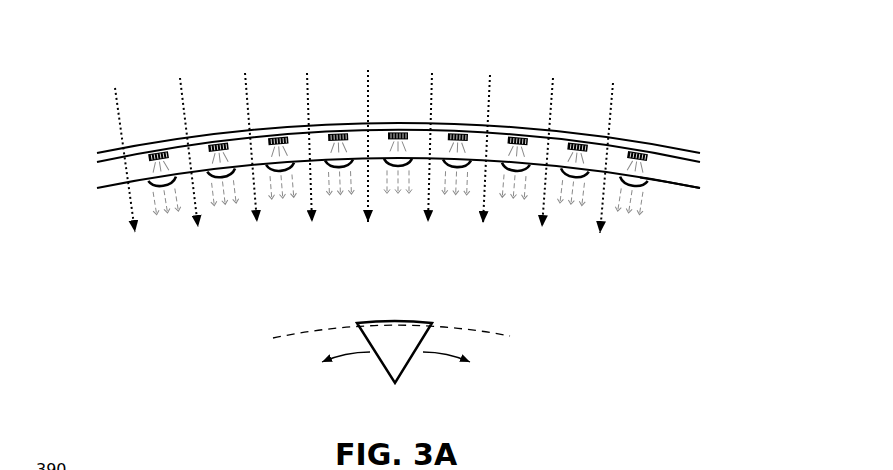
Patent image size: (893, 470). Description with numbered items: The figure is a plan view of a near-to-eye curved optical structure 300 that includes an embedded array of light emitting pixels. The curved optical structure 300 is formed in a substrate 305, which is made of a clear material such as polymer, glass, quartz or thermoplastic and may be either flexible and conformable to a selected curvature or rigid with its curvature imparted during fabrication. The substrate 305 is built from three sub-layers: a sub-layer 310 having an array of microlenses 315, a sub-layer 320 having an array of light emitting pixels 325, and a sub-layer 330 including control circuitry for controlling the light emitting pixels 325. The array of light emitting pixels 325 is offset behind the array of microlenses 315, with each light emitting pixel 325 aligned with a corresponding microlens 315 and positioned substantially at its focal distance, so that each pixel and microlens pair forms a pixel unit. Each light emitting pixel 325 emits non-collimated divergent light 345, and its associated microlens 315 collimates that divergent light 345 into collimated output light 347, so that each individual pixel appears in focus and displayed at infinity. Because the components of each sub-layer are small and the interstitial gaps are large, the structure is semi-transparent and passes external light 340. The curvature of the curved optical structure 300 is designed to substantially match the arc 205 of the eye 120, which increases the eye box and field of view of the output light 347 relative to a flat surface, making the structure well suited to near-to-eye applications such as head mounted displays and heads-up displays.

The curved optical structure 300 is at (645, 77).
The substrate 305 is at (705, 152).
The sub-layer 310 is at (95, 195).
The microlens 315 is at (650, 183).
The sub-layer 320 is at (94, 178).
The light emitting pixel 325 is at (160, 152).
The sub-layer 330 is at (94, 157).
The external light 340 is at (308, 75).
The divergent light 345 is at (148, 168).
The collimated output light 347 is at (175, 212).
The arc 205 is at (505, 337).
The eye 120 is at (407, 353).